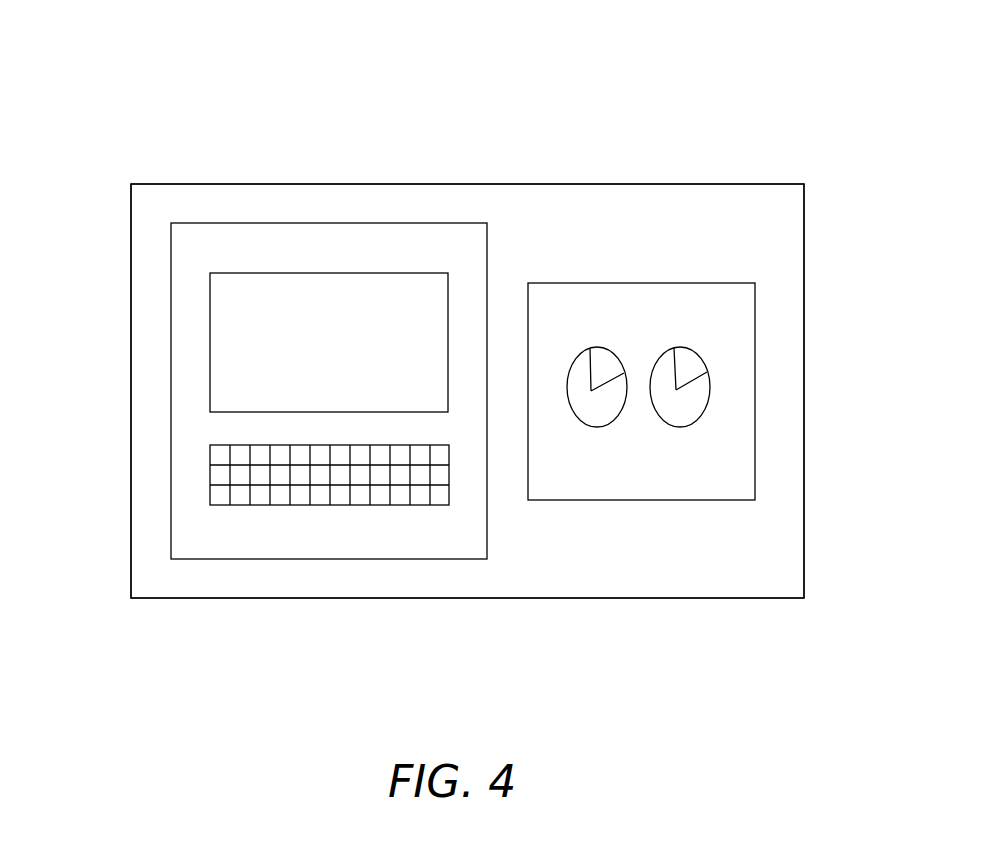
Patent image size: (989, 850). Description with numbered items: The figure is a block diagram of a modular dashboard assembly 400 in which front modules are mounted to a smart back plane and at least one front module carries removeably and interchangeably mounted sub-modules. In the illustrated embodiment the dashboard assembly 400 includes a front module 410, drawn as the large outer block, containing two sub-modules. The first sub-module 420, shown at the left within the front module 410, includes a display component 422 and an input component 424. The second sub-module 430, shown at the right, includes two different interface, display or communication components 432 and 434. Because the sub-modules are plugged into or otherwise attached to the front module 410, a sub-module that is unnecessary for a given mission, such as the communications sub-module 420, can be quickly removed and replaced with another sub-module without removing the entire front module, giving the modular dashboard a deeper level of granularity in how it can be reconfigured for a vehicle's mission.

The modular dashboard assembly 400 is at (156, 120).
The front module 410 is at (227, 598).
The sub-module 420 is at (418, 222).
The display component 422 is at (210, 308).
The input component 424 is at (210, 463).
The sub-module 430 is at (755, 307).
The interface, display or communication component 432 is at (591, 427).
The interface, display or communication component 434 is at (708, 397).